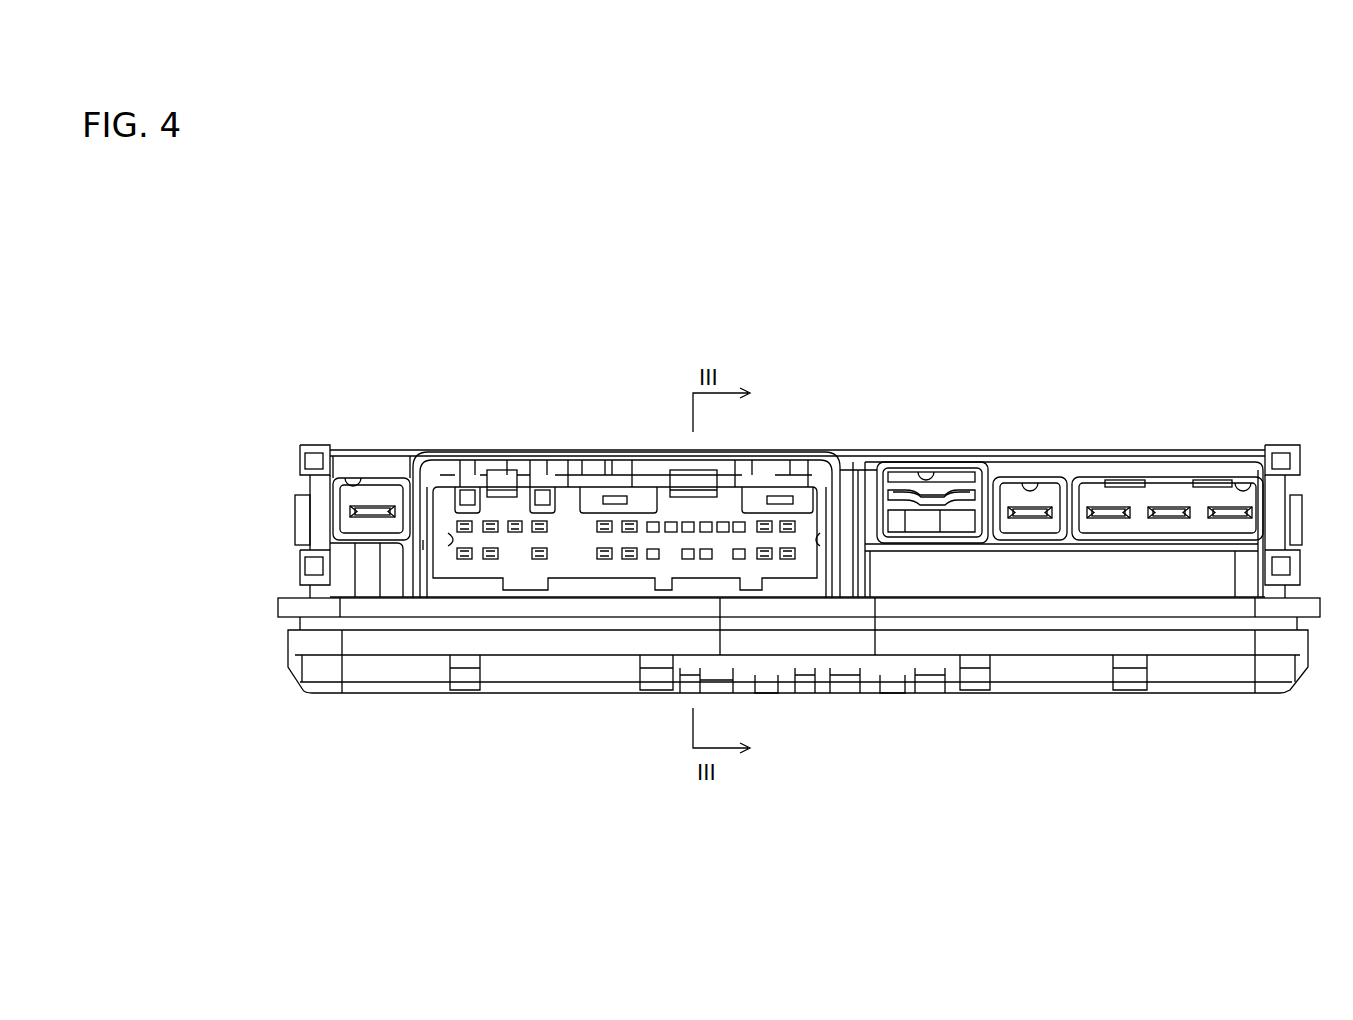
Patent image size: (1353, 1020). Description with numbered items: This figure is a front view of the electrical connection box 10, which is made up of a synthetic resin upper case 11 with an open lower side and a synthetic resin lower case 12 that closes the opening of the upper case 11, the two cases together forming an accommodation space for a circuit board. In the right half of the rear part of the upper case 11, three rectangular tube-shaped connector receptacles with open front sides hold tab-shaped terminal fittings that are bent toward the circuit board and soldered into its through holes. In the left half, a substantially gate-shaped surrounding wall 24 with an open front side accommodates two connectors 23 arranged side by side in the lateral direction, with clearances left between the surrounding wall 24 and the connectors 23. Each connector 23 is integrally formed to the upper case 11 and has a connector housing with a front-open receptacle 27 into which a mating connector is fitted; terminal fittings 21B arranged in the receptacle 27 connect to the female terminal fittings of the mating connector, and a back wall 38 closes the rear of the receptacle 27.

The electrical connection box 10 is at (1233, 413).
The upper case 11 is at (862, 456).
The lower case 12 is at (1185, 675).
The terminal fitting 21B is at (488, 557).
The connector 23 is at (452, 485).
The surrounding wall 24 is at (612, 462).
The receptacle 27 is at (452, 538).
The back wall 38 is at (487, 466).